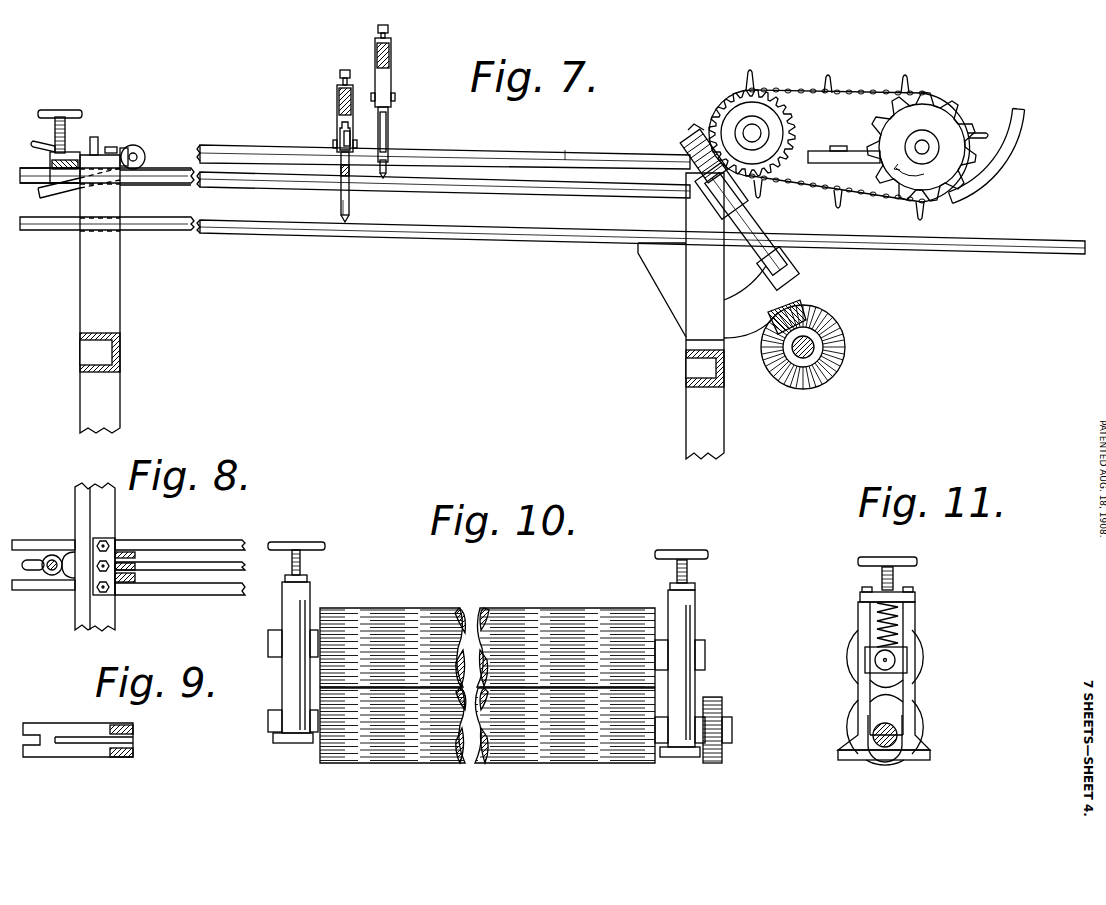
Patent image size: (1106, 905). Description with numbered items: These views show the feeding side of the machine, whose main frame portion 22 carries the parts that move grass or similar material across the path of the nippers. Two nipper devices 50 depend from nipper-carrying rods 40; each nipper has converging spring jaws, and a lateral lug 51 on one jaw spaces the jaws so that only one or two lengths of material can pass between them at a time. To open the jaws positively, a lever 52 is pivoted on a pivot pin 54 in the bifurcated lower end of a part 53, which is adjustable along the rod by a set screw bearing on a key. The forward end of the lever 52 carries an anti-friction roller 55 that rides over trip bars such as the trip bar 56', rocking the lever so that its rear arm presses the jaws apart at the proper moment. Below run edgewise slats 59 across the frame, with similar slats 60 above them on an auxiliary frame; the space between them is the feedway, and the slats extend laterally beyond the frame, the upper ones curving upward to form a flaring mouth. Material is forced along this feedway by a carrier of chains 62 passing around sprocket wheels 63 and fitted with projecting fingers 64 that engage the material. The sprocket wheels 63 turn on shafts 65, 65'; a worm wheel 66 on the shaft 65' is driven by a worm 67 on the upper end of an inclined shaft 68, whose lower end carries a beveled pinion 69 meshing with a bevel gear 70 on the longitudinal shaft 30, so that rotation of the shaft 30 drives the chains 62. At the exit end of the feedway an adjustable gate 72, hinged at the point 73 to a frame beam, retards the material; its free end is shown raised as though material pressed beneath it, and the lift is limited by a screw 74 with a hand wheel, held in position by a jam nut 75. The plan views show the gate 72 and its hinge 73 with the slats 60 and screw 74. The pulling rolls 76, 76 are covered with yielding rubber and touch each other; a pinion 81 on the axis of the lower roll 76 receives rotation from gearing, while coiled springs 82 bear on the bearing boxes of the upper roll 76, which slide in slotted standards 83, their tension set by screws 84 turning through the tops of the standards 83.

In FIG. 7, the main portion of the frame 22 is at (118, 314).
In FIG. 7, the longitudinal shaft 30 is at (804, 358).
In FIG. 7, the nipper-carrying rod 40 is at (350, 123).
In FIG. 7, the nipper device 50 is at (369, 187).
In FIG. 7, the laterally extending lug 51 is at (325, 210).
In FIG. 7, the lever 52 is at (338, 130).
In FIG. 7, the part depending from the nipper-carrying rod 53 is at (338, 108).
In FIG. 7, the pivot pin 54 is at (334, 143).
In FIG. 7, the anti-friction roller 55 is at (340, 152).
In FIG. 7, the trip bar 56' is at (577, 144).
In FIG. 7, the slats 59 is at (497, 234).
In FIG. 7, the slats 60 is at (498, 184).
In FIG. 8, the slats 60 is at (205, 590).
In FIG. 7, the chains 62 is at (856, 92).
In FIG. 7, the sprocket wheels 63 is at (938, 118).
In FIG. 7, the projecting fingers 64 is at (907, 78).
In FIG. 7, the shaft 65 is at (911, 145).
In FIG. 7, the shaft 65' is at (752, 133).
In FIG. 7, the worm wheel 66 is at (712, 128).
In FIG. 7, the worm 67 is at (692, 150).
In FIG. 7, the inclined shaft 68 is at (748, 230).
In FIG. 7, the beveled pinion 69 is at (800, 306).
In FIG. 7, the bevel gear 70 is at (845, 340).
In FIG. 7, the adjustable gate 72 is at (56, 200).
In FIG. 8, the adjustable gate 72 is at (36, 540).
In FIG. 9, the adjustable gate 72 is at (77, 725).
In FIG. 7, the hinge point 73 is at (137, 152).
In FIG. 8, the hinge point 73 is at (126, 550).
In FIG. 7, the screw 74 is at (68, 118).
In FIG. 8, the screw 74 is at (53, 555).
In FIG. 7, the jam nut 75 is at (68, 145).
In FIG. 10, the rolls 76 is at (583, 604).
In FIG. 11, the rolls 76 is at (920, 660).
In FIG. 10, the pinion 81 is at (720, 700).
In FIG. 11, the coiled springs 82 is at (898, 627).
In FIG. 10, the slotted standards 83 is at (288, 608).
In FIG. 11, the slotted standards 83 is at (862, 614).
In FIG. 10, the screws 84 is at (302, 560).
In FIG. 11, the screws 84 is at (895, 575).